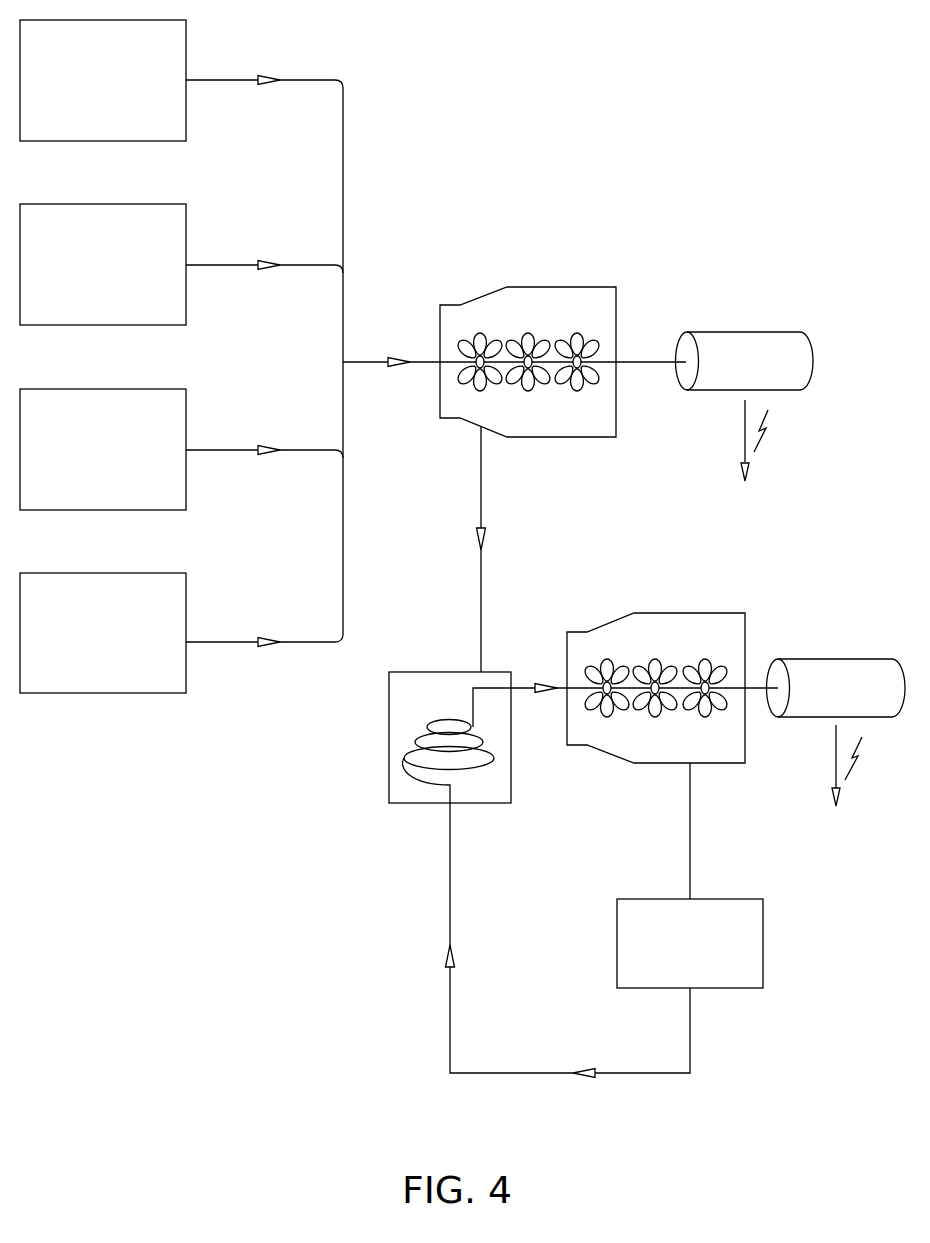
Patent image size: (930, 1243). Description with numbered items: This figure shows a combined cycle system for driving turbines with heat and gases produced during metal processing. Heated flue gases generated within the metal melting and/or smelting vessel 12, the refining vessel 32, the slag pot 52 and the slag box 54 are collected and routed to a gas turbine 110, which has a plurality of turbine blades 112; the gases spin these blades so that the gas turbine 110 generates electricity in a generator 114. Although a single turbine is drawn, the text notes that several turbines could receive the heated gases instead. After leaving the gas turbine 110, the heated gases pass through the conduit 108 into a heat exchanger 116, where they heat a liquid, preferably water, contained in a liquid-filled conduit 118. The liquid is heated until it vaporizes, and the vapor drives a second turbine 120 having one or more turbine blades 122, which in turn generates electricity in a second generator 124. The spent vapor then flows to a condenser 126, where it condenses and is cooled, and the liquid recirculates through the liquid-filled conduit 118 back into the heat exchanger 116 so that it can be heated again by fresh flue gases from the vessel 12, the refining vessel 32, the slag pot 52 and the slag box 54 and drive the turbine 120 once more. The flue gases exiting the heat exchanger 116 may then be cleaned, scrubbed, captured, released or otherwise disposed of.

The metal melting and/or smelting vessel 12 is at (86, 97).
The refining vessel 32 is at (86, 281).
The slag pot 52 is at (86, 467).
The slag box 54 is at (86, 651).
The conduit 108 is at (305, 80).
The gas turbine 110 is at (600, 287).
The turbine blades 112 is at (527, 333).
The generator 114 is at (765, 332).
The heat exchanger 116 is at (388, 737).
The liquid-filled conduit 118 is at (450, 902).
The turbine 120 is at (731, 613).
The turbine blades 122 is at (665, 660).
The generator 124 is at (858, 658).
The condenser 126 is at (740, 899).